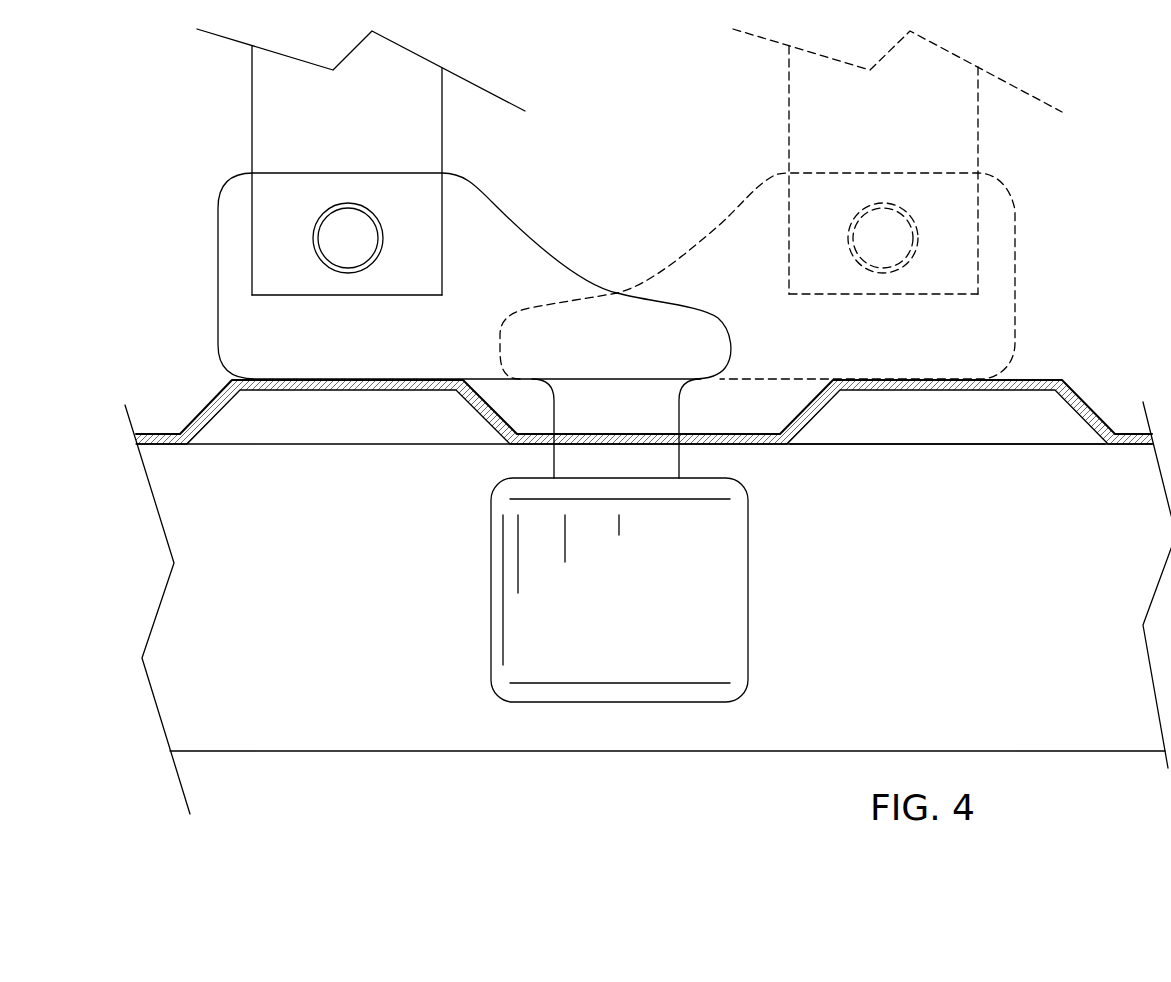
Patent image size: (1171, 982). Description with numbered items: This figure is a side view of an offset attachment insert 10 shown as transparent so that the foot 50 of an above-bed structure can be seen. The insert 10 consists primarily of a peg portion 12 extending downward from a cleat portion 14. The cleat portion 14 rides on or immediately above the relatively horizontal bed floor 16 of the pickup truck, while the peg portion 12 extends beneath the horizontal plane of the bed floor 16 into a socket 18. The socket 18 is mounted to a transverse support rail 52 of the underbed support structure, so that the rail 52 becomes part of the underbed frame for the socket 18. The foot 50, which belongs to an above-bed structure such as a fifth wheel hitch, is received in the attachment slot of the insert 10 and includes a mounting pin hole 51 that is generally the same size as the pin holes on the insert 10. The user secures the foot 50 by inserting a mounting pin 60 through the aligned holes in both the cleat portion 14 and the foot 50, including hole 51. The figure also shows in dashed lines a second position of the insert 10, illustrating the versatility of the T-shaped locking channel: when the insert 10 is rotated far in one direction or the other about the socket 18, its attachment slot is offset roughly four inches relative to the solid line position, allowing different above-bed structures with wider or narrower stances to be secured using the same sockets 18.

The offset attachment insert 10 is at (495, 228).
The peg portion 12 is at (662, 457).
The cleat portion 14 is at (248, 330).
The bed floor 16 is at (1070, 390).
The socket 18 is at (518, 660).
The foot 50 is at (300, 122).
The mounting pin hole 51 is at (314, 222).
The transverse support rail 52 is at (927, 457).
The mounting pin 60 is at (330, 250).